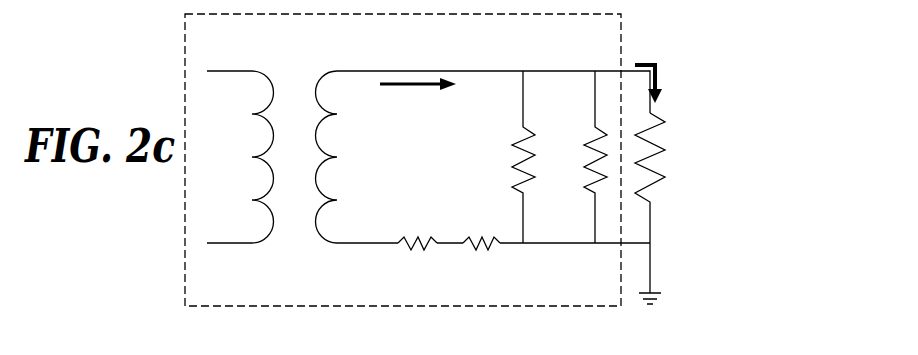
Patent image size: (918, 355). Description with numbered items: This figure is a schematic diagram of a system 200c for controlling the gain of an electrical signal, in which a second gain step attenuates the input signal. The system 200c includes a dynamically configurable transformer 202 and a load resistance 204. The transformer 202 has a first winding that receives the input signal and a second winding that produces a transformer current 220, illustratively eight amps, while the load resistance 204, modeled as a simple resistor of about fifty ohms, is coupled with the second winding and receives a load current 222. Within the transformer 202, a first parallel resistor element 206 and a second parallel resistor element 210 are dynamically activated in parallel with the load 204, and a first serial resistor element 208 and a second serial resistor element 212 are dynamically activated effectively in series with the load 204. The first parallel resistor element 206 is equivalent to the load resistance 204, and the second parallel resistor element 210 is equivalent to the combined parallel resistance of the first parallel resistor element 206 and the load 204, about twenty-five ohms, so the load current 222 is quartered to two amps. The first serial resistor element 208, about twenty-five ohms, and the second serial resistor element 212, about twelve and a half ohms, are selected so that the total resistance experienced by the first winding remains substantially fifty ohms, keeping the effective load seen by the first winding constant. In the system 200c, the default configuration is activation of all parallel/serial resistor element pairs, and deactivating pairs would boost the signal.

The system 200c is at (431, 160).
The dynamically configurable transformer 202 is at (403, 160).
The load resistance 204 is at (708, 208).
The first parallel resistor element 206 is at (505, 157).
The first serial resistor element 208 is at (408, 224).
The second parallel resistor element 210 is at (577, 157).
The second serial resistor element 212 is at (478, 262).
The transformer current 220 is at (421, 94).
The load current 222 is at (701, 84).